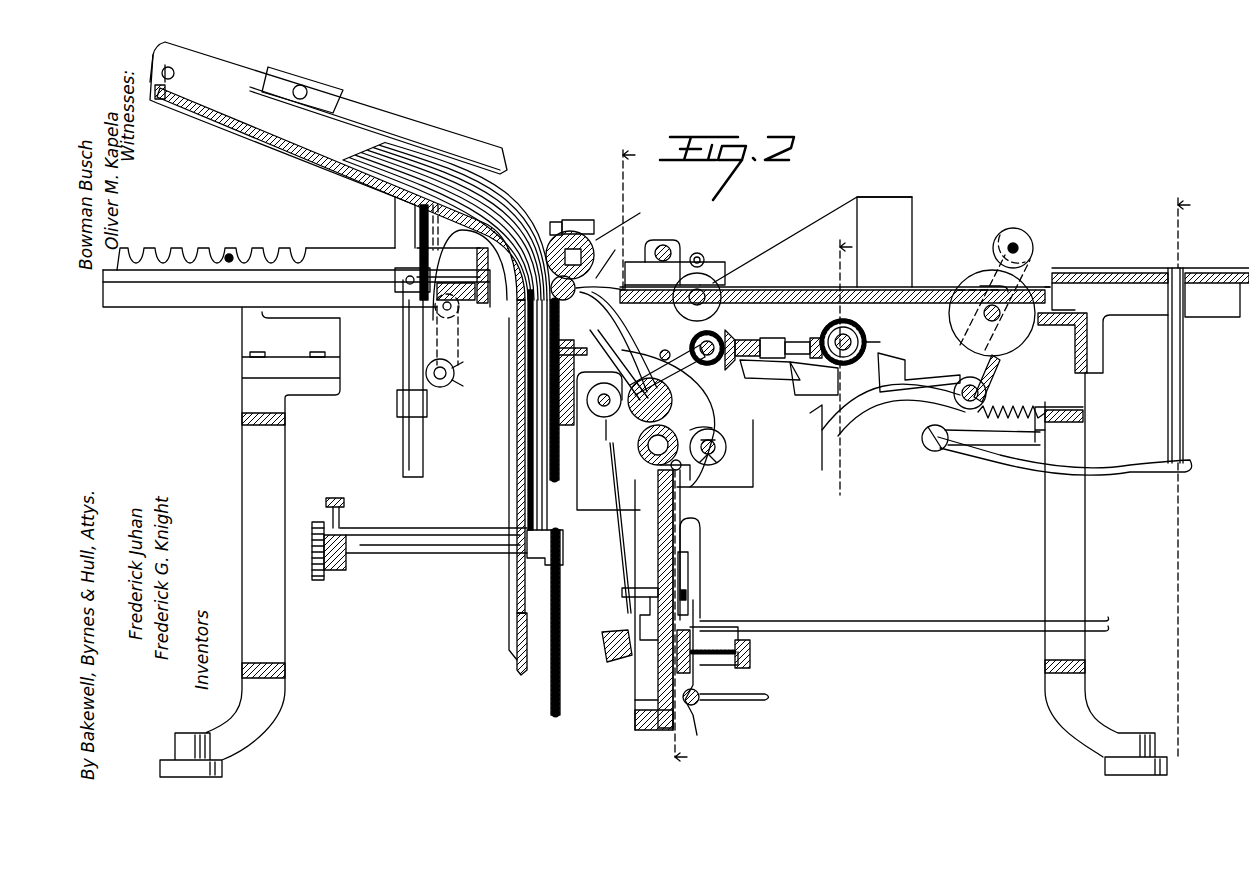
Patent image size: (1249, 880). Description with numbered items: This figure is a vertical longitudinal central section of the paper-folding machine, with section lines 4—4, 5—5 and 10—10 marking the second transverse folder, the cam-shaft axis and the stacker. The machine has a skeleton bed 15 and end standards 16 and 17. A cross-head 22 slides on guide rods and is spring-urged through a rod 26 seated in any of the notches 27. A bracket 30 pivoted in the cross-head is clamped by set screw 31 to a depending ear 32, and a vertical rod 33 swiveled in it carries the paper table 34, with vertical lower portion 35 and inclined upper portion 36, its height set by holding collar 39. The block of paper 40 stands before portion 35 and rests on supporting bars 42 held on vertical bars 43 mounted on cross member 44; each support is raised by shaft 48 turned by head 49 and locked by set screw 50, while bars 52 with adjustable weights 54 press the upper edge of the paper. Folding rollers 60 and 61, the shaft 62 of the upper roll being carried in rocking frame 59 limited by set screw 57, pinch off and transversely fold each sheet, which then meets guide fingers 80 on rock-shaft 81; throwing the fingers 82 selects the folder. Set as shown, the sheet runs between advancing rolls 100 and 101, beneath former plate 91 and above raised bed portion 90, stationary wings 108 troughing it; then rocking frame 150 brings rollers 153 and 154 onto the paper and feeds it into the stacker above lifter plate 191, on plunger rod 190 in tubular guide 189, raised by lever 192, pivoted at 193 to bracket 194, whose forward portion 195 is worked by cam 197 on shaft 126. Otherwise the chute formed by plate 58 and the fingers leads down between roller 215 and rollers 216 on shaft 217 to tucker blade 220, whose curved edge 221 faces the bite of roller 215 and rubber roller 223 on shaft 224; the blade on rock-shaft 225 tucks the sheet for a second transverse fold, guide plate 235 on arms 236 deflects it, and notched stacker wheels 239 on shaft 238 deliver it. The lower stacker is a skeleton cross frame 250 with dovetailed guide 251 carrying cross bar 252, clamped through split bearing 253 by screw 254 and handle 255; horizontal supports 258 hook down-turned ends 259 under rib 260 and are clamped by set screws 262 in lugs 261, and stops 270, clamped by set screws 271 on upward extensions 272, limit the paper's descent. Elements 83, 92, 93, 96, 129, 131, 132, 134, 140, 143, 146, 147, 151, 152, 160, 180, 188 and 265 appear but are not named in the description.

The section line 4— 4 is at (652, 456).
The section line 5— 5 is at (843, 354).
The section line 10— 10 is at (1178, 528).
The skeleton bed 15 is at (977, 306).
The end standard 16 is at (270, 523).
The end standard 17 is at (1106, 574).
The cross-head 22 is at (355, 260).
The rod 26 is at (229, 254).
The notches 27 is at (150, 258).
The bracket 30 is at (427, 409).
The set screw 31 is at (455, 385).
The ear 32 is at (460, 330).
The vertical rod 33 is at (405, 441).
The paper table 34 is at (306, 165).
The lower portion of table 35 is at (517, 438).
The inclined upper portion of table 36 is at (312, 148).
The holding collar 39 is at (395, 283).
The block of paper 40 is at (508, 204).
The supporting bars 42 is at (458, 534).
The vertical bars 43 is at (561, 600).
The cross member 44 is at (565, 390).
The shaft 48 is at (412, 550).
The head 49 is at (322, 581).
The set screw 50 is at (346, 503).
The bars 52 is at (328, 108).
The weights 54 is at (336, 92).
The set screw 57 is at (572, 364).
The plate 58 is at (562, 373).
The rocking frame 59 is at (629, 218).
The folding roller 60 is at (576, 296).
The folding roller 61 is at (582, 234).
The shaft 62 is at (557, 222).
The guide fingers 80 is at (619, 365).
The rock-shaft 81 is at (668, 366).
The guide fingers 82 is at (616, 338).
The lever end 83 is at (612, 253).
The raised bed portion 90 is at (878, 290).
The former plate 91 is at (785, 290).
The spring 92 is at (703, 257).
The bracket 93 is at (676, 250).
The pivot 96 is at (630, 280).
The advancing roll 100 is at (712, 261).
The advancing roll 101 is at (712, 297).
The stationary wings 108 is at (893, 228).
The shaft 126 is at (866, 345).
The gear 129 is at (858, 328).
The shaft 131 is at (775, 338).
The collar 132 is at (738, 341).
The bevel gear 134 is at (695, 345).
The pivot 140 is at (962, 394).
The plate 143 is at (814, 384).
The bar 146 is at (935, 372).
The bracket 147 is at (762, 378).
The rocking frame 150 is at (982, 385).
The disc 151 is at (992, 305).
The pin 152 is at (1020, 249).
The roller 153 is at (983, 285).
The roller 154 is at (1013, 240).
The spring 160 is at (1018, 410).
The housing 180 is at (1103, 323).
The block 188 is at (1223, 318).
The vertical tubular guide 189 is at (1217, 290).
The plunger rod 190 is at (1168, 353).
The lifter plate 191 is at (1100, 276).
The lever 192 is at (1065, 456).
The pivot 193 is at (926, 445).
The bracket 194 is at (992, 430).
The forward portion of lever 195 is at (882, 396).
The cam 197 is at (823, 437).
The roller 215 is at (690, 376).
The coöperating rollers 216 is at (605, 420).
The shaft 217 is at (604, 410).
The tucker blade 220 is at (620, 542).
The curved upper edge 221 is at (648, 448).
The rubber roller 223 is at (690, 464).
The shaft 224 is at (680, 476).
The rock-shaft 225 is at (617, 652).
The curved guide plate 235 is at (702, 414).
The arms 236 is at (672, 400).
The shaft 238 is at (727, 447).
The notched stacker wheels 239 is at (726, 457).
The skeleton cross frame 250 is at (657, 600).
The vertical dovetailed guide 251 is at (690, 562).
The cross bar 252 is at (692, 645).
The split bearing 253 is at (693, 730).
The screw 254 is at (705, 695).
The handle 255 is at (745, 700).
The horizontal supports 258 is at (897, 625).
The down-turned inner ends 259 is at (675, 650).
The rib 260 is at (692, 628).
The lugs 261 is at (752, 652).
The set screws 262 is at (752, 660).
The housing 265 is at (700, 530).
The stops 270 is at (626, 590).
The set screws 271 is at (688, 592).
The upward extensions 272 is at (650, 607).